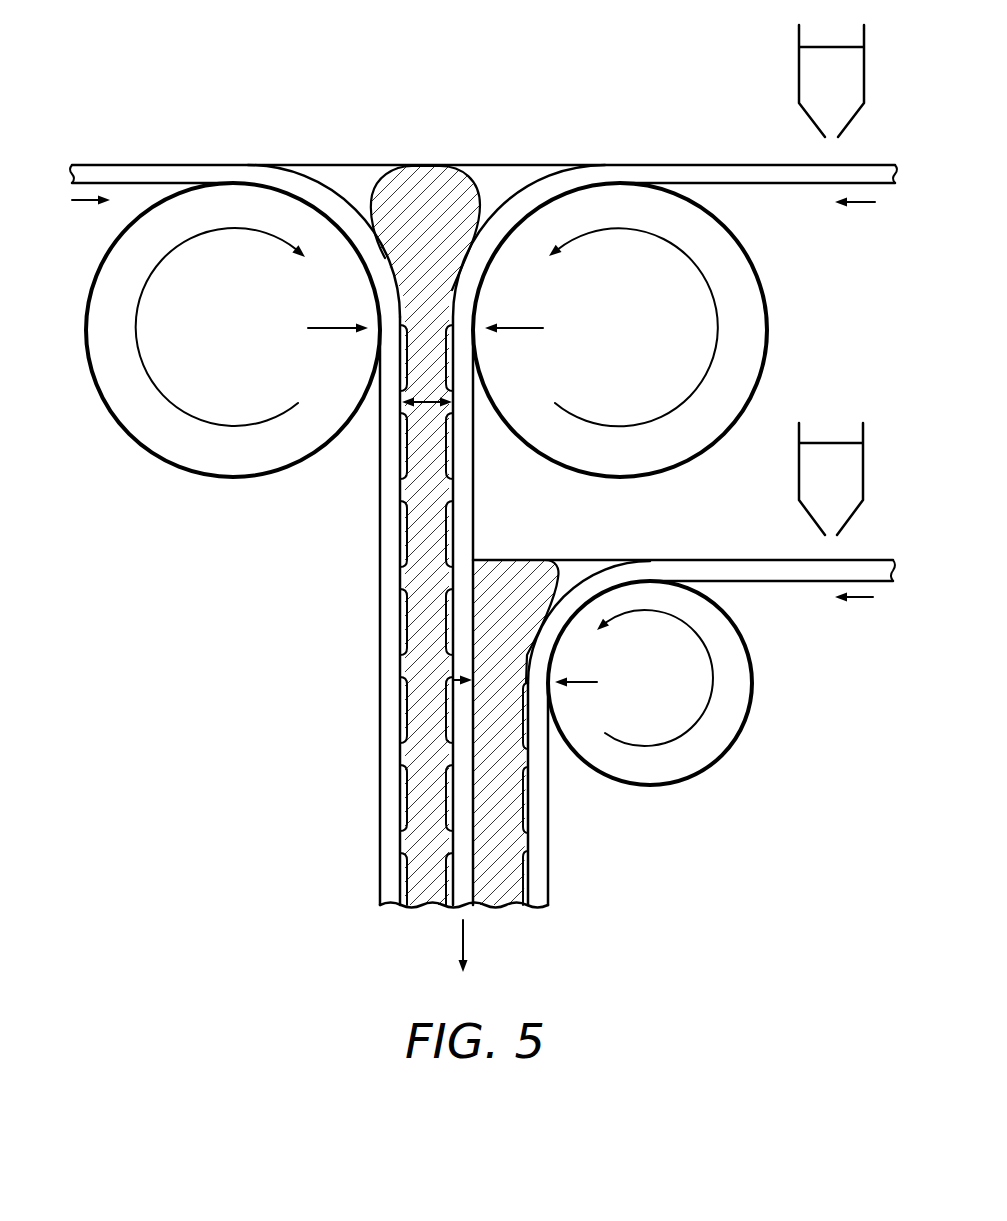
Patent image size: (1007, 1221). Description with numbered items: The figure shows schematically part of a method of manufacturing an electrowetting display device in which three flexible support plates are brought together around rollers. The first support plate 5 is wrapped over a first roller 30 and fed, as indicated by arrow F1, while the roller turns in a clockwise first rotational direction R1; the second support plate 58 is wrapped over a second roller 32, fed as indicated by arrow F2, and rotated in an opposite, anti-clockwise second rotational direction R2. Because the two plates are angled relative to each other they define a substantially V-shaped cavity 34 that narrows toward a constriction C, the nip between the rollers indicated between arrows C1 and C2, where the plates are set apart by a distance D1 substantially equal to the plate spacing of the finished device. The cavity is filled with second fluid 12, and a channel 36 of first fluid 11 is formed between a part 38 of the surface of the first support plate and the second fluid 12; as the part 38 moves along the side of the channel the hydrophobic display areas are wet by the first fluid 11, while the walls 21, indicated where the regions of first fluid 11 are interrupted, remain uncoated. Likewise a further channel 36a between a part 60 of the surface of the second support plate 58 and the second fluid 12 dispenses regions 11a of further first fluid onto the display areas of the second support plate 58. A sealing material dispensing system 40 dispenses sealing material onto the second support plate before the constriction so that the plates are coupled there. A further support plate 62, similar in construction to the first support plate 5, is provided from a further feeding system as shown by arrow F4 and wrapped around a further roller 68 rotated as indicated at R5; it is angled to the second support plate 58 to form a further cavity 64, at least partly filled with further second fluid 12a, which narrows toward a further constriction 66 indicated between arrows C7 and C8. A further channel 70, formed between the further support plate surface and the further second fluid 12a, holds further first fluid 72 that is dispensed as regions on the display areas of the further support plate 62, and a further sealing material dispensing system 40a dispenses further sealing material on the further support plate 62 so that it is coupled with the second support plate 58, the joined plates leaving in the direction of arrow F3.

The first support plate 5 is at (132, 170).
The first fluid 11 is at (400, 553).
The regions of the further first fluid 11a is at (448, 868).
The second fluid 12 is at (442, 183).
The further second fluid 12a is at (495, 582).
The walls 21 is at (402, 748).
The first roller 30 is at (233, 477).
The second roller 32 is at (767, 325).
The cavity 34 is at (405, 198).
The channel 36 is at (362, 180).
The further channel 36a is at (493, 187).
The part of a surface of the first support plate 38 is at (330, 190).
The sealing material dispensing system 40 is at (799, 40).
The further sealing material dispensing system 40a is at (799, 485).
The second support plate 58 is at (715, 172).
The part of a surface of the second support plate 60 is at (540, 180).
The further support plate 62 is at (750, 566).
The further cavity 64 is at (538, 572).
The further constriction 66 is at (500, 752).
The further roller 68 is at (725, 745).
The further channel 70 is at (582, 562).
The further first fluid 72 is at (525, 873).
The constriction C is at (436, 341).
The arrow indicating the constriction C1 is at (330, 328).
The arrow indicating the constriction C2 is at (522, 328).
The arrow indicating the further constriction C7 is at (590, 682).
The arrow indicating the further constriction C8 is at (458, 676).
The distance D1 is at (433, 407).
The feed direction F1 is at (85, 200).
The feed direction F2 is at (862, 202).
The output direction F3 is at (463, 938).
The arrow F4 is at (860, 597).
The first rotational direction R1 is at (148, 278).
The second rotational direction R2 is at (702, 278).
The rotating of the further roller R5 is at (706, 645).